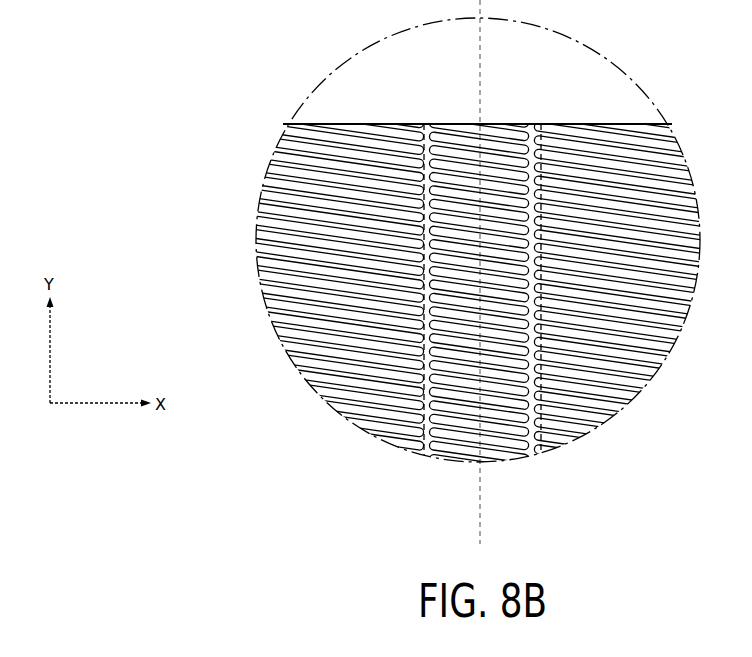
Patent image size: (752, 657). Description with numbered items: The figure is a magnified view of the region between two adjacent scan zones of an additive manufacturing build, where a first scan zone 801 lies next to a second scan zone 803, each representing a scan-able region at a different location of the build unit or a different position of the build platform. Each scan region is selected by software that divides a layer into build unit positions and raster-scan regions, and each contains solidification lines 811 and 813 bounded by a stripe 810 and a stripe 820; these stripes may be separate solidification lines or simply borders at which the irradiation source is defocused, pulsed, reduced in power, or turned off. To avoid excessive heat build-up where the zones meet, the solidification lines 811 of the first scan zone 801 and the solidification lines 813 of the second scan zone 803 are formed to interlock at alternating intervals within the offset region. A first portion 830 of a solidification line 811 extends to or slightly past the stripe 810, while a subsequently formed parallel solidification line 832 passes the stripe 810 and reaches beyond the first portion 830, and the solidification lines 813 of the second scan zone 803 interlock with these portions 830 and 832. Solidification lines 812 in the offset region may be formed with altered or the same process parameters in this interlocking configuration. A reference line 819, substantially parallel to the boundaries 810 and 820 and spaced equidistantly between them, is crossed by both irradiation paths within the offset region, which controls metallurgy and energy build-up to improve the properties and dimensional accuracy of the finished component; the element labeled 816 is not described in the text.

The first scan zone 801 is at (360, 124).
The second scan zone 803 is at (635, 124).
The stripe 810 is at (438, 126).
The solidification lines 811 is at (392, 230).
The solidification lines 812 is at (432, 252).
The solidification lines 813 is at (590, 275).
The right region boundary trace 816 is at (533, 273).
The reference line 819 is at (500, 440).
The stripe 820 is at (536, 124).
The first portion of a solidification line 830 is at (407, 173).
The solidification line 832 is at (475, 153).